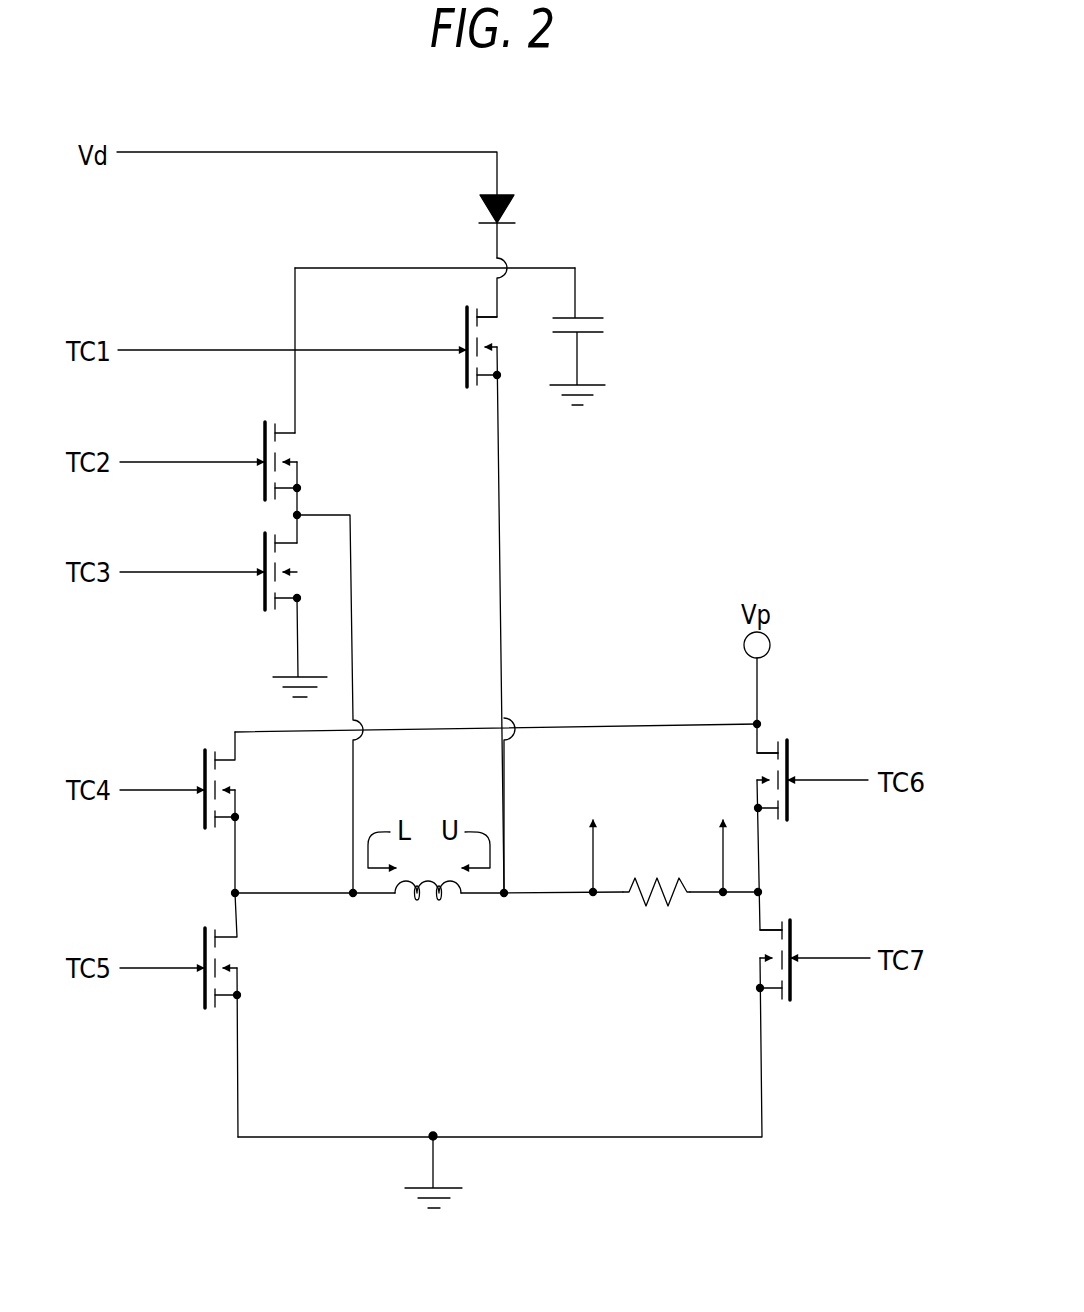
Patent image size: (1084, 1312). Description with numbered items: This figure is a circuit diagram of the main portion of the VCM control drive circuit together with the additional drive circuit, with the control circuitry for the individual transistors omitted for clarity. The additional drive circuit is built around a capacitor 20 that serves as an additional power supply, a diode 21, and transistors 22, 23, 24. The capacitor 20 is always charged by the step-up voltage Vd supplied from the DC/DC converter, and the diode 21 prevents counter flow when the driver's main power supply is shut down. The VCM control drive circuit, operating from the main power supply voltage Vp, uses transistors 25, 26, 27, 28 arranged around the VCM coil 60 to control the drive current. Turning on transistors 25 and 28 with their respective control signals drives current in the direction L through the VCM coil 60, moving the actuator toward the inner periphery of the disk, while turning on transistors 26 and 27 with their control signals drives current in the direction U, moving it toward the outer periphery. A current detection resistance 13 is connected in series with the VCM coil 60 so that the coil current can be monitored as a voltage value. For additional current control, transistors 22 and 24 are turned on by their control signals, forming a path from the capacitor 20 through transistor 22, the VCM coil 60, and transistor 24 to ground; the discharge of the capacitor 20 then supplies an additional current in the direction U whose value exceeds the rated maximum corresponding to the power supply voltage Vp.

The current detection resistance 13 is at (658, 870).
The capacitor 20 is at (610, 326).
The diode 21 is at (513, 209).
The transistor 22 is at (469, 395).
The transistor 23 is at (268, 414).
The transistor 24 is at (270, 618).
The transistor 25 is at (208, 745).
The transistor 26 is at (210, 920).
The transistor 27 is at (785, 738).
The transistor 28 is at (788, 913).
The VCM coil 60 is at (428, 904).